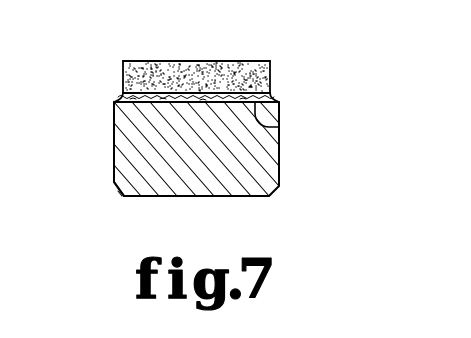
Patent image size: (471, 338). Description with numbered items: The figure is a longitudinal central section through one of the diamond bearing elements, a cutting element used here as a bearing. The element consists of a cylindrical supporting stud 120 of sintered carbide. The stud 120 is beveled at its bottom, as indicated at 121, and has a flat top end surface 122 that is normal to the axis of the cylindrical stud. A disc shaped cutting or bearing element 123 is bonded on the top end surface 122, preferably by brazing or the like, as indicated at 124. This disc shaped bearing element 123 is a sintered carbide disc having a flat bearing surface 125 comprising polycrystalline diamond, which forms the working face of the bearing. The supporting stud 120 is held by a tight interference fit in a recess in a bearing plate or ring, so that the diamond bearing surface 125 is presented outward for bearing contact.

The cylindrical supporting stud 120 is at (120, 155).
The bevel 121 is at (117, 194).
The flat top end surface 122 is at (280, 127).
The disc shaped cutting or bearing element 123 is at (270, 78).
The brazing 124 is at (115, 101).
The flat bearing surface 125 is at (178, 60).